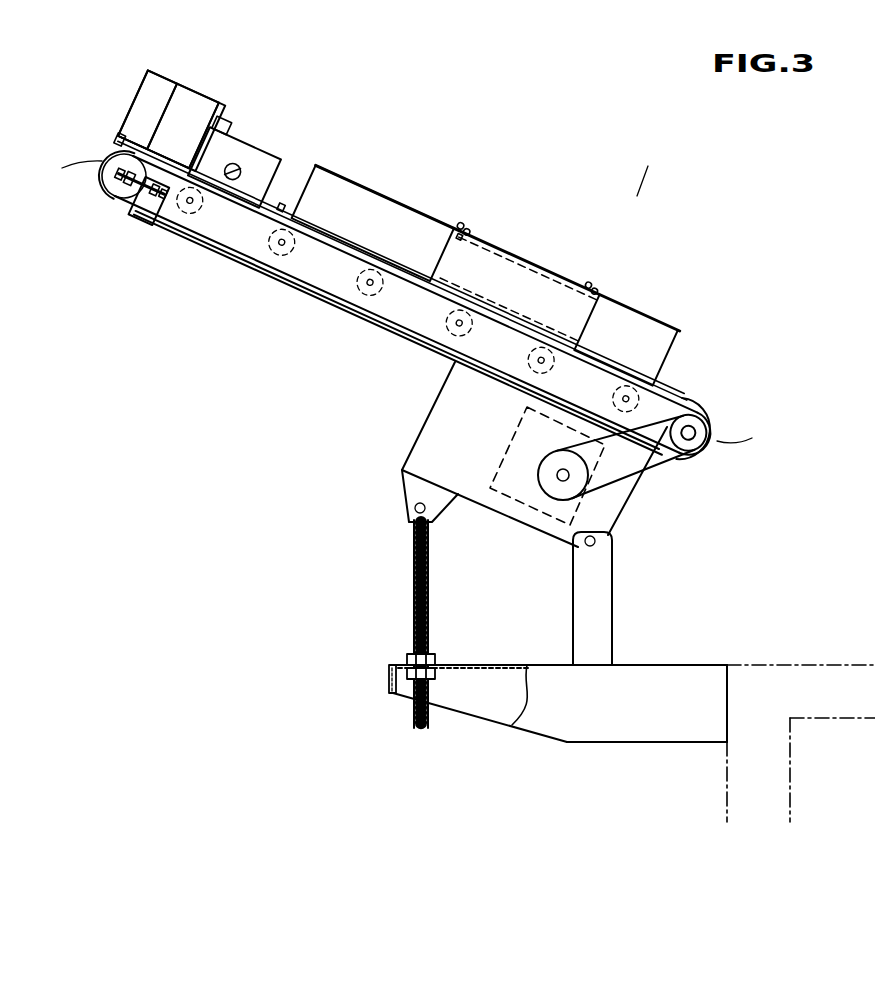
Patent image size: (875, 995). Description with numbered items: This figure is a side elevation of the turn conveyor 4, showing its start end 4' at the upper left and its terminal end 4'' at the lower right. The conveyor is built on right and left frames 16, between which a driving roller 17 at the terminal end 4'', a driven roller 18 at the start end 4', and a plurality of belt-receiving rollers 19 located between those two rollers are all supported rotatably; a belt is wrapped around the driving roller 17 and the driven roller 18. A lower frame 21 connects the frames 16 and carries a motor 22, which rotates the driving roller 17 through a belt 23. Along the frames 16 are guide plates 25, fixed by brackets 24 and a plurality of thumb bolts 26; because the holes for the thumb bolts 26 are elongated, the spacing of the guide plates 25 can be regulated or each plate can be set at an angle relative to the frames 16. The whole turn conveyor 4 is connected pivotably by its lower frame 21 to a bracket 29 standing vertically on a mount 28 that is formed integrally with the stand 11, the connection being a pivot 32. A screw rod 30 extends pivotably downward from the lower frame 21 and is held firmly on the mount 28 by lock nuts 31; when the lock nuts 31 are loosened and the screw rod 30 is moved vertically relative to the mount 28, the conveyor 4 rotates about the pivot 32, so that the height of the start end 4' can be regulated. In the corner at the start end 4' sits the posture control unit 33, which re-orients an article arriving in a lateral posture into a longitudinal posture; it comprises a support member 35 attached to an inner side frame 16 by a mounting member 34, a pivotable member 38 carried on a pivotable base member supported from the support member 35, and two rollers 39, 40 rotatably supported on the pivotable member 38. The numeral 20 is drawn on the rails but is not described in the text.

The stand 11 is at (826, 682).
The frames 16 is at (331, 292).
The driving roller 17 is at (700, 420).
The driven roller 18 is at (118, 190).
The belt-receiving rollers 19 is at (396, 324).
The guide rails 20 is at (280, 207).
The lower frame 21 is at (440, 423).
The motor 22 is at (520, 505).
The belt 23 is at (632, 480).
The brackets 24 is at (525, 285).
The guide plates 25 is at (400, 195).
The thumb bolts 26 is at (470, 225).
The mount 28 is at (690, 662).
The bracket 29 is at (606, 598).
The screw rod 30 is at (413, 572).
The lock nuts 31 is at (410, 660).
The pivot 32 is at (613, 539).
The posture control unit 33 is at (133, 95).
The mounting member 34 is at (258, 152).
The support member 35 is at (226, 132).
The pivotable member 38 is at (118, 150).
The roller 39 is at (192, 100).
The roller 40 is at (158, 88).
The turn conveyor 4 is at (650, 164).
The start end 4' is at (69, 172).
The terminal end 4'' is at (752, 433).